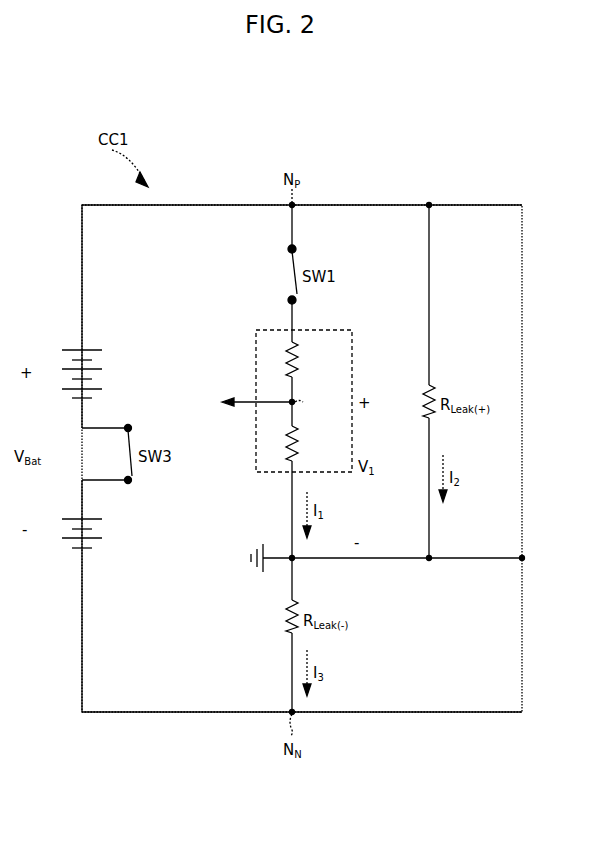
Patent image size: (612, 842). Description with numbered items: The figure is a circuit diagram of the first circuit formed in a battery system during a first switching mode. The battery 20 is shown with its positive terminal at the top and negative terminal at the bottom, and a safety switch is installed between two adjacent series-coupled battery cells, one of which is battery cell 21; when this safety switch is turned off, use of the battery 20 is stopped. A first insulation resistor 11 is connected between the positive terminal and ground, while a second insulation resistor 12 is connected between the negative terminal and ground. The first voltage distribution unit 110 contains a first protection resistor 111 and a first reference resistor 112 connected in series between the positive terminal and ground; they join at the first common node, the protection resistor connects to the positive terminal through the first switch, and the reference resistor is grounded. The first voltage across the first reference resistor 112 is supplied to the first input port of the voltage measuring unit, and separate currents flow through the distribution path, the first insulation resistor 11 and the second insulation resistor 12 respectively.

The battery 20 is at (106, 369).
The battery cell 21 is at (102, 538).
The first insulation resistor 11 is at (423, 403).
The second insulation resistor 12 is at (286, 619).
The first voltage distribution unit 110 is at (299, 401).
The first protection resistor 111 is at (284, 353).
The first reference resistor 112 is at (284, 438).